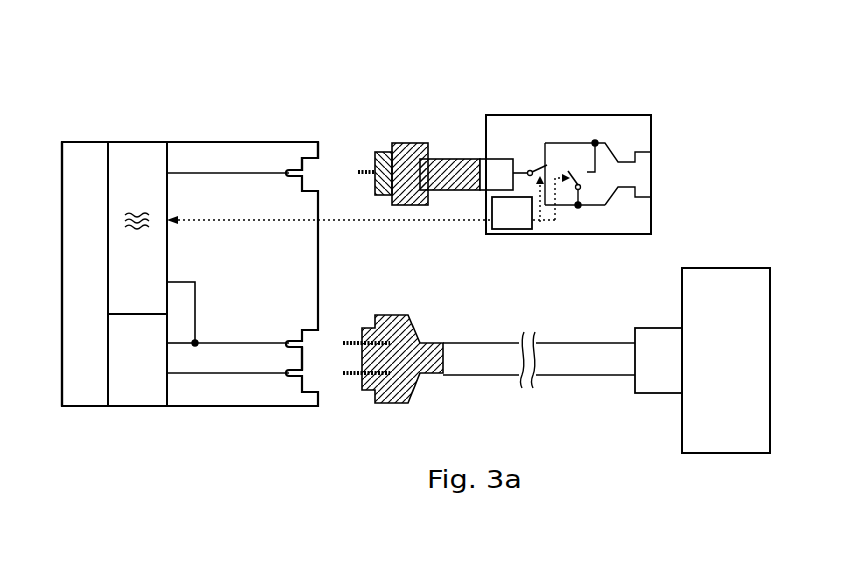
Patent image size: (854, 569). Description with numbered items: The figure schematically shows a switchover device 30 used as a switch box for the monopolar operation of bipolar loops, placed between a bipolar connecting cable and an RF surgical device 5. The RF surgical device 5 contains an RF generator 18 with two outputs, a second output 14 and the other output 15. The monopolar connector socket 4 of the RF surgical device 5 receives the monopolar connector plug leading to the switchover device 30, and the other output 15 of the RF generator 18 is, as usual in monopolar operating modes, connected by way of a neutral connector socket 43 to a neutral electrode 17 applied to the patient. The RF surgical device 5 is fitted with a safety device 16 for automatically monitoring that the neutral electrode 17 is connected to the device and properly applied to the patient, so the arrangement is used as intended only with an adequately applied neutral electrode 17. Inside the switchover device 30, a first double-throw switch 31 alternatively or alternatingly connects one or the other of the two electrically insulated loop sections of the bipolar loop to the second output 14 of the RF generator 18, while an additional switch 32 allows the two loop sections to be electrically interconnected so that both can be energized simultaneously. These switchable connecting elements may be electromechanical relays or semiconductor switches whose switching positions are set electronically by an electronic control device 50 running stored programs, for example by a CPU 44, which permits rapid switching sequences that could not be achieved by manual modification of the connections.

The RF surgical device 5 is at (213, 132).
The RF generator 18 is at (134, 156).
The safety device 16 is at (132, 385).
The CPU 44 is at (83, 385).
The monopolar connector socket 4 is at (310, 163).
The second output of the RF generator 14 is at (170, 174).
The output of the RF generator 15 is at (168, 282).
The neutral connector socket 43 is at (310, 382).
The switchover device 30 is at (597, 106).
The first double-throw switch 31 is at (538, 168).
The switch 32 is at (575, 172).
The electronic control device 50 is at (512, 226).
The neutral electrode 17 is at (739, 373).